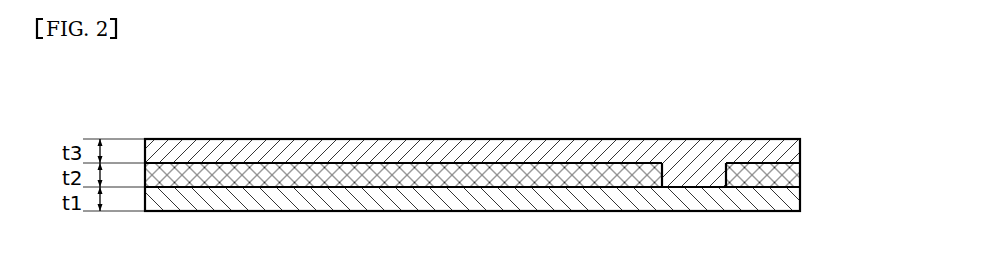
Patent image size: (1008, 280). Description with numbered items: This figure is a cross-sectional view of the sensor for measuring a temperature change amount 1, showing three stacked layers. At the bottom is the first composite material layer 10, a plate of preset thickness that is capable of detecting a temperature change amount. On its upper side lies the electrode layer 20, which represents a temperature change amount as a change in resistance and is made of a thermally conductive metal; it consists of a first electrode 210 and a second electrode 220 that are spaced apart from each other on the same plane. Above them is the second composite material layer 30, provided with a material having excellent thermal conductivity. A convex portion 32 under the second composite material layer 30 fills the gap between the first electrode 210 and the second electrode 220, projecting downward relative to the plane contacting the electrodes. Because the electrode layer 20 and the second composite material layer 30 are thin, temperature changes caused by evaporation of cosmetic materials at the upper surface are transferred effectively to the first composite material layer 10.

The sensor for measuring a temperature change amount 1 is at (490, 104).
The first composite material layer 10 is at (816, 206).
The electrode layer 20 is at (517, 213).
The first electrode 210 is at (585, 175).
The second electrode 220 is at (762, 175).
The convex portion 32 is at (687, 175).
The second composite material layer 30 is at (816, 144).